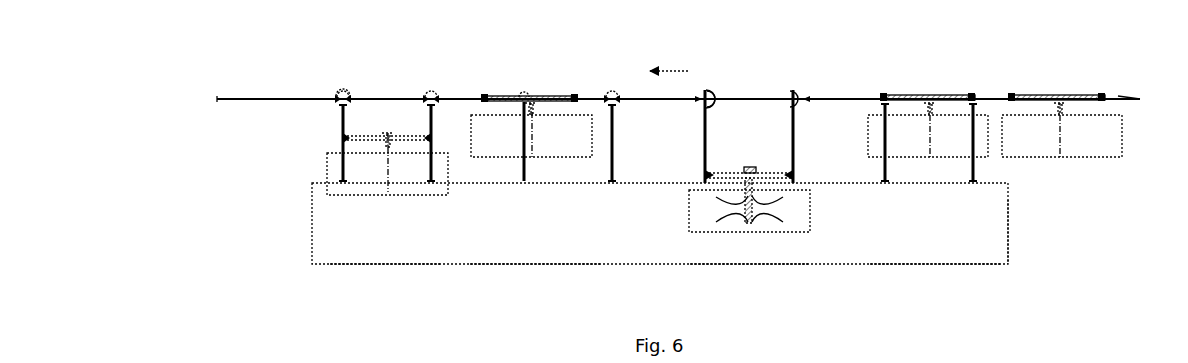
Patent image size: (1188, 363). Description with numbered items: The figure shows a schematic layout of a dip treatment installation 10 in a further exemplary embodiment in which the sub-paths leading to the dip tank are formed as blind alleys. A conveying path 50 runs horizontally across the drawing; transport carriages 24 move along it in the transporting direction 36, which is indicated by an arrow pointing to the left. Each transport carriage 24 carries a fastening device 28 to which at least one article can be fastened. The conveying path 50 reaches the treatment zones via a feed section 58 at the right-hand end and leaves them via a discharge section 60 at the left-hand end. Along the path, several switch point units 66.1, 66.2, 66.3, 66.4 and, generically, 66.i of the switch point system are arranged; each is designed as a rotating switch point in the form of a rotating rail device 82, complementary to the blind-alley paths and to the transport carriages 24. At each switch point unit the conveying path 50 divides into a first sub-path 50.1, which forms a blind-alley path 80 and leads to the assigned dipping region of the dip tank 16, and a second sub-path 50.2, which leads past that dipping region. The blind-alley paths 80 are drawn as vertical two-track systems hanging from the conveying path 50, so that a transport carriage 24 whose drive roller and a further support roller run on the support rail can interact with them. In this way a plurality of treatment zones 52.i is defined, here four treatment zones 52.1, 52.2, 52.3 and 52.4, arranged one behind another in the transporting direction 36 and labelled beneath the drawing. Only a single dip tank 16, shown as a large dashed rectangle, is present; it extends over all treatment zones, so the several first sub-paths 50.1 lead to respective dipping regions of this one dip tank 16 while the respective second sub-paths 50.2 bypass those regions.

The dip treatment installation 10 is at (985, 70).
The dip tank 16 is at (311, 240).
The transport carriage 24 is at (755, 164).
The fastening device 28 is at (775, 222).
The transporting direction 36 is at (670, 71).
The conveying path 50 is at (1135, 95).
The first sub-path 50.1 is at (423, 153).
The second sub-path 50.2 is at (240, 98).
The first treatment zone 52.1 is at (925, 267).
The second treatment zone 52.2 is at (762, 267).
The third treatment zone 52.3 is at (525, 267).
The fourth treatment zone 52.4 is at (385, 267).
The treatment zone 52.i is at (1035, 276).
The feed section 58 is at (1120, 95).
The discharge section 60 is at (218, 102).
The switch point unit 66.1 is at (897, 93).
The switch point unit 66.2 is at (712, 92).
The switch point unit 66.3 is at (540, 93).
The switch point unit 66.4 is at (352, 93).
The switch point unit 66.i is at (1003, 92).
The blind-alley path 80 is at (318, 121).
The rotating rail device 82 is at (332, 92).